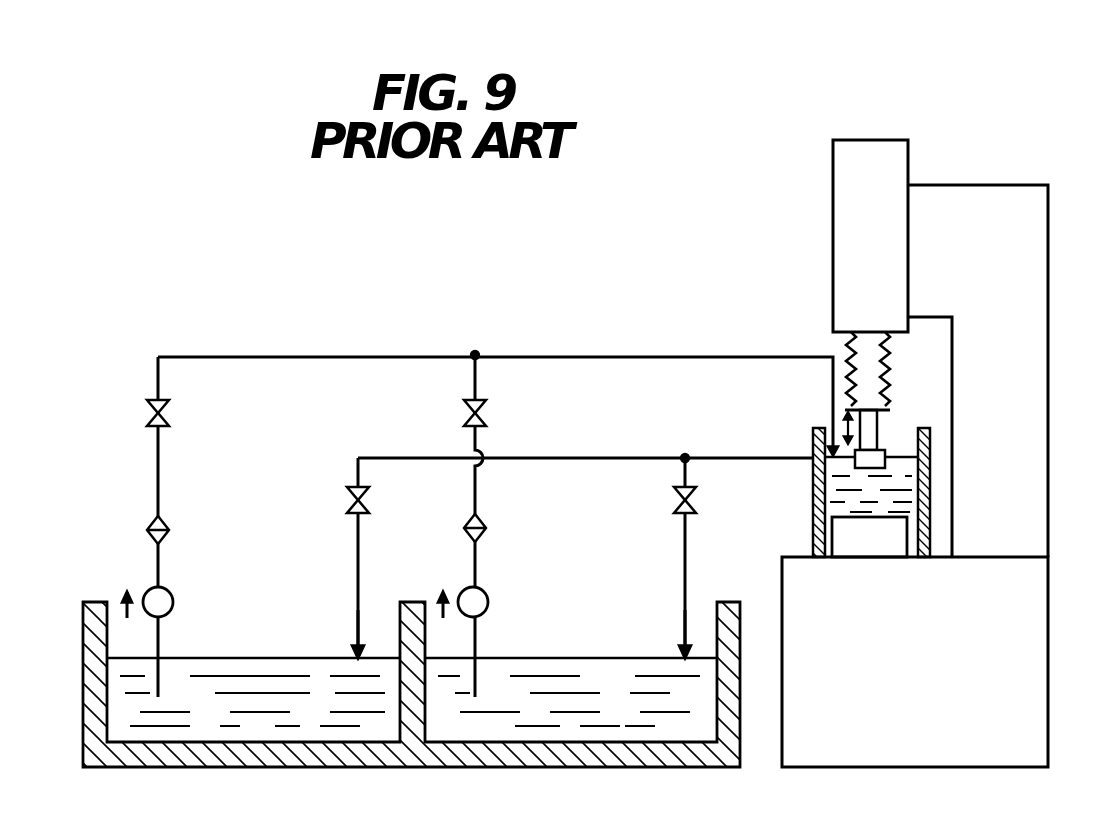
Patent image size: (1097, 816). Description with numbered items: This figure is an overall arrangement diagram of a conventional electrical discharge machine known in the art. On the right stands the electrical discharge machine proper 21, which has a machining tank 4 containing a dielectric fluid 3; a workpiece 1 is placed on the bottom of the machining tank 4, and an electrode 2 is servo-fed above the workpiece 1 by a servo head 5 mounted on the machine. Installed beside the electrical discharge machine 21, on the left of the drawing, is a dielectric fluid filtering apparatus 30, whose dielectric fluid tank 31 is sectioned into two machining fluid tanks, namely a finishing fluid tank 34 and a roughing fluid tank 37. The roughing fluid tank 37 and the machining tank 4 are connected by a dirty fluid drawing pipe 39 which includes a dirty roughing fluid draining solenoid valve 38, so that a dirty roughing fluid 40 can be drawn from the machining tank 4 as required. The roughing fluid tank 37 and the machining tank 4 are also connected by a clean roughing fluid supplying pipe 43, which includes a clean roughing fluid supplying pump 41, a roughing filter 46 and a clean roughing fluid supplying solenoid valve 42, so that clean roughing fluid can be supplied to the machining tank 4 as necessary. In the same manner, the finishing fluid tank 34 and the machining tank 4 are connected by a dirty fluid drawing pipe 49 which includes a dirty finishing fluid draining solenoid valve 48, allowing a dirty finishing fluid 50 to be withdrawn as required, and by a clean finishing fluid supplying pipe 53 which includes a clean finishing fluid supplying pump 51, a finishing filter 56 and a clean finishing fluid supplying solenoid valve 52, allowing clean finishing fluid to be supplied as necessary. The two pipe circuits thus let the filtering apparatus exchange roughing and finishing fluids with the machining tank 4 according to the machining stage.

The workpiece 1 is at (870, 548).
The electrode 2 is at (869, 456).
The dielectric fluid 3 is at (895, 470).
The machining tank 4 is at (813, 433).
The servo head 5 is at (835, 229).
The electrical discharge machine proper 21 is at (901, 101).
The dielectric fluid filtering apparatus 30 is at (400, 303).
The dielectric fluid tank 31 is at (725, 760).
The finishing fluid tank 34 is at (262, 758).
The roughing fluid tank 37 is at (566, 758).
The dirty roughing fluid draining solenoid valve 38 is at (689, 494).
The dirty fluid drawing pipe 39 is at (688, 554).
The dirty roughing fluid 40 is at (700, 661).
The clean roughing fluid supplying pump 41 is at (487, 594).
The clean roughing fluid supplying solenoid valve 42 is at (479, 413).
The clean roughing fluid supplying pipe 43 is at (478, 378).
The roughing filter 46 is at (482, 522).
The dirty finishing fluid draining solenoid valve 48 is at (362, 494).
The dirty fluid drawing pipe 49 is at (361, 556).
The dirty finishing fluid 50 is at (379, 661).
The clean finishing fluid supplying pump 51 is at (172, 594).
The clean finishing fluid supplying solenoid valve 52 is at (162, 412).
The clean finishing fluid supplying pipe 53 is at (158, 378).
The finishing filter 56 is at (165, 524).